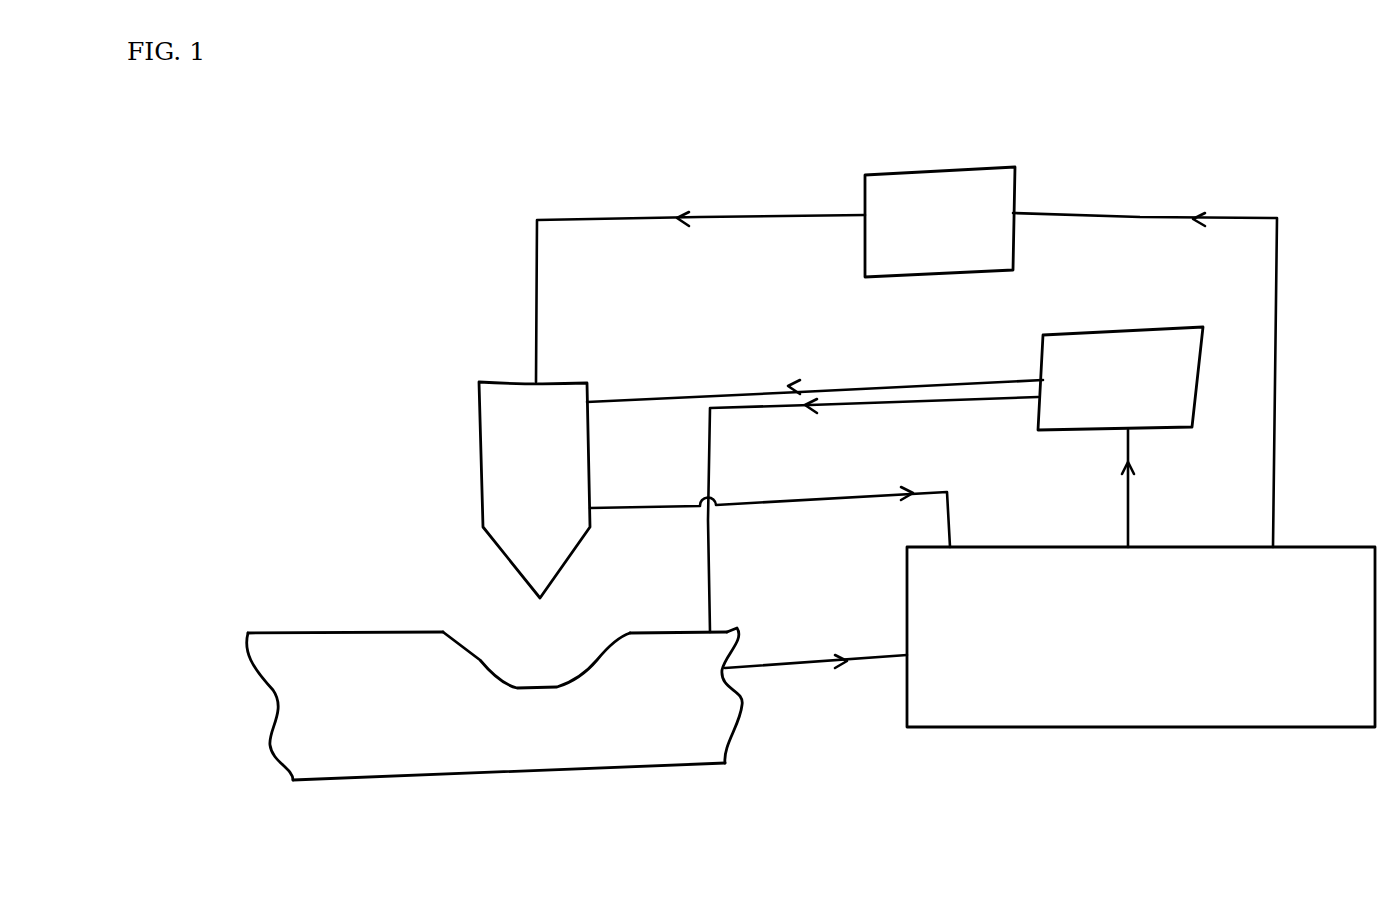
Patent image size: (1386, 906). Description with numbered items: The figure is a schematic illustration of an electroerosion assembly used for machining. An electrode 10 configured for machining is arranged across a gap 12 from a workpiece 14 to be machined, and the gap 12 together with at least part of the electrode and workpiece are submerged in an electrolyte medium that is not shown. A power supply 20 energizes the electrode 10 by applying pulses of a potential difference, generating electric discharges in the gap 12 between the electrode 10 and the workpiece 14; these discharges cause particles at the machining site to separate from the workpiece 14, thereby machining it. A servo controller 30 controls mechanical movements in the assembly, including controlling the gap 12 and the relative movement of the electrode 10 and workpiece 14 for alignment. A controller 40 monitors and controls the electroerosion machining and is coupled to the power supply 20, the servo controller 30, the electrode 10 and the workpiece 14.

The electrode 10 is at (553, 497).
The gap 12 is at (551, 658).
The workpiece 14 is at (382, 740).
The power supply 20 is at (1117, 425).
The servo controller 30 is at (898, 267).
The controller 40 is at (1127, 678).